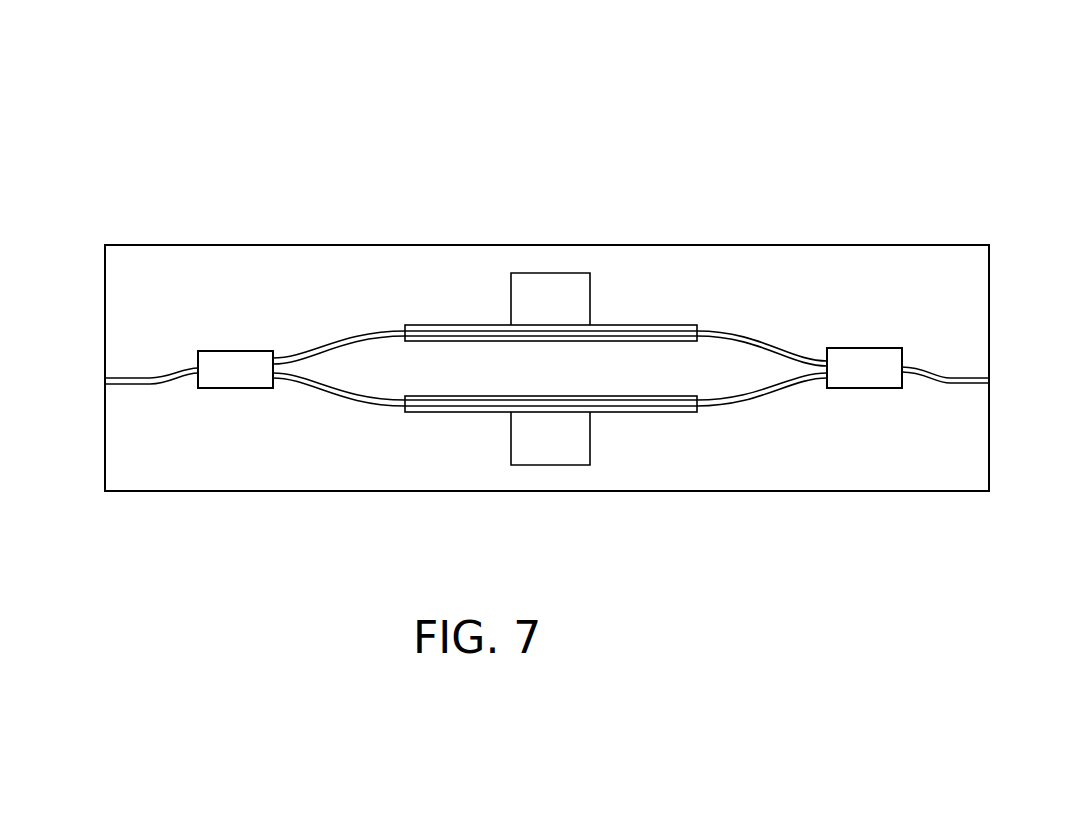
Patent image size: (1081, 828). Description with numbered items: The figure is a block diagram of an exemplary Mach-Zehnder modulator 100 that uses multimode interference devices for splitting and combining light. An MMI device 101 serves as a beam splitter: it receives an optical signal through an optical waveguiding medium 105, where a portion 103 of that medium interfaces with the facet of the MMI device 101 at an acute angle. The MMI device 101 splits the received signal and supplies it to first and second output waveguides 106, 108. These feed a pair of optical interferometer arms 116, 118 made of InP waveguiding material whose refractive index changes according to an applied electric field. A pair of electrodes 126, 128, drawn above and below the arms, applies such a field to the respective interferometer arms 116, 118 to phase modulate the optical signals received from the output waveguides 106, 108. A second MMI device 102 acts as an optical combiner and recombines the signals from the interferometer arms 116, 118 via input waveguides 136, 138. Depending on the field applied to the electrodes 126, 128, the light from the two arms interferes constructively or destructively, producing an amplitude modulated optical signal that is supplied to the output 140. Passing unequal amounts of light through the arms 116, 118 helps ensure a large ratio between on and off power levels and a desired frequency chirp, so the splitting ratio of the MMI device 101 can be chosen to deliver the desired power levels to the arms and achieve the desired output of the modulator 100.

The Mach-Zehnder modulator 100 is at (497, 92).
The MMI device 101 is at (208, 351).
The MMI device 102 is at (868, 348).
The portion of the optical waveguiding medium 103 is at (178, 385).
The optical waveguiding medium 105 is at (153, 378).
The first output waveguide 106 is at (290, 352).
The second output waveguide 108 is at (285, 388).
The optical interferometer arm 116 is at (358, 342).
The optical interferometer arm 118 is at (371, 406).
The electrode 126 is at (558, 296).
The electrode 128 is at (552, 443).
The input waveguide 136 is at (787, 353).
The input waveguide 138 is at (800, 382).
The output 140 is at (973, 375).